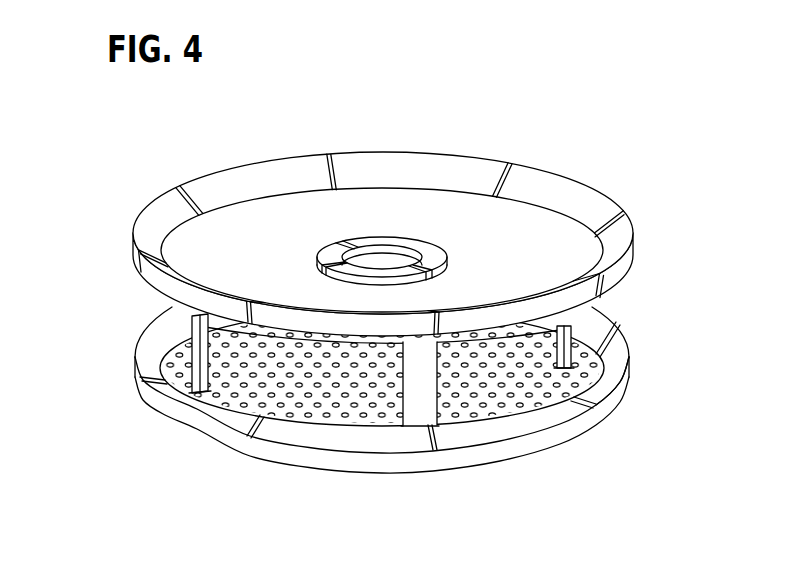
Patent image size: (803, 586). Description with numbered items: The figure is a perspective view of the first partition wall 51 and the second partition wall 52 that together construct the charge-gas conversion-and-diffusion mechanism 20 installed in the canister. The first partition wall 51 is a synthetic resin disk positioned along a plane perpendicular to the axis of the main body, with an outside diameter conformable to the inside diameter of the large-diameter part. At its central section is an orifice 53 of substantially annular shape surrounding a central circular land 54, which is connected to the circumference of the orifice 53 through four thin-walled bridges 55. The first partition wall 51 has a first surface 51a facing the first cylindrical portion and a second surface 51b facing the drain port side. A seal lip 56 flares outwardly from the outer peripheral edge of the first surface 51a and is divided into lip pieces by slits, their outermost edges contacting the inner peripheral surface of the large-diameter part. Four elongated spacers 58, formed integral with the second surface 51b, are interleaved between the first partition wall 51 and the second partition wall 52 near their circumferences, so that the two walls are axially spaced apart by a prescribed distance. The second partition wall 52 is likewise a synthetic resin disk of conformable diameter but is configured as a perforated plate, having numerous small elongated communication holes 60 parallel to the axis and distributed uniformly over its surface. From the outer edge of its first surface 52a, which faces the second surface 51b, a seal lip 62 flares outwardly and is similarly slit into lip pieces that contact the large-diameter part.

The charge-gas conversion-and-diffusion mechanism 20 is at (604, 124).
The first partition wall 51 is at (146, 280).
The first surface 51a is at (548, 225).
The second surface 51b is at (614, 299).
The second partition wall 52 is at (173, 423).
The first surface 52a is at (593, 366).
The orifice 53 is at (342, 248).
The land 54 is at (433, 250).
The bridges 55 is at (333, 242).
The seal lip 56 is at (157, 217).
The spacers 58 is at (423, 412).
The communication holes 60 is at (363, 412).
The seal lip 62 is at (150, 353).